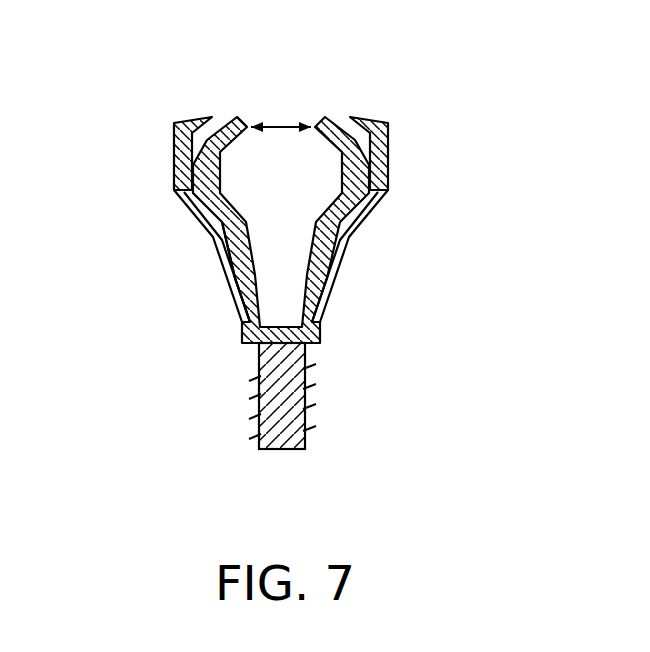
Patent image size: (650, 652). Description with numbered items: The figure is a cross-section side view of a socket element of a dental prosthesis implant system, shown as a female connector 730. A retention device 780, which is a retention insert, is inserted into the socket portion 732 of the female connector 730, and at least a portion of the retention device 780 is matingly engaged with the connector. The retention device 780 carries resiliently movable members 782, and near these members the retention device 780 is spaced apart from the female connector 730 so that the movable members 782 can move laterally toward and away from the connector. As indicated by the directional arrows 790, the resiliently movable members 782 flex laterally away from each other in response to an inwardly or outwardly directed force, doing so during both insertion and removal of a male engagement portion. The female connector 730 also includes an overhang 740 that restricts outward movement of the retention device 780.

The female connector 730 is at (392, 153).
The overhang 740 is at (202, 118).
The socket portion 732 is at (174, 192).
The retention device 780 is at (236, 280).
The resiliently movable members 782 is at (245, 122).
The directional arrows 790 is at (281, 127).